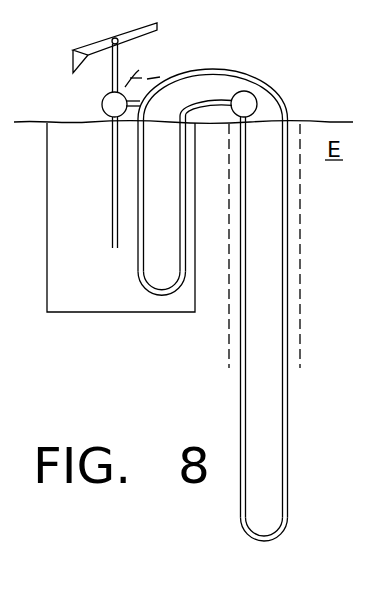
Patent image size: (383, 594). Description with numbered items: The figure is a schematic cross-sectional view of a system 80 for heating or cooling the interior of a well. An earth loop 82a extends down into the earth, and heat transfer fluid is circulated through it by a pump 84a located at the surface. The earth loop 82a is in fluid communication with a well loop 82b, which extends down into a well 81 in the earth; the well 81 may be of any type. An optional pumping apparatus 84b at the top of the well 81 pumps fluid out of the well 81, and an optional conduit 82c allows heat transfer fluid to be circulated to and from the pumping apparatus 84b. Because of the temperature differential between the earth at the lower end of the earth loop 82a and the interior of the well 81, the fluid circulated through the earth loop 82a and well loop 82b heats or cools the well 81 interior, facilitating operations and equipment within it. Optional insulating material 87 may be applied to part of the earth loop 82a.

The system 80 is at (295, 112).
The well 81 is at (70, 313).
The earth loop 82a is at (289, 408).
The well loop 82b is at (148, 296).
The conduit 82c is at (136, 100).
The pump 84a is at (244, 100).
The pumping apparatus 84b is at (101, 104).
The insulating material 87 is at (301, 258).